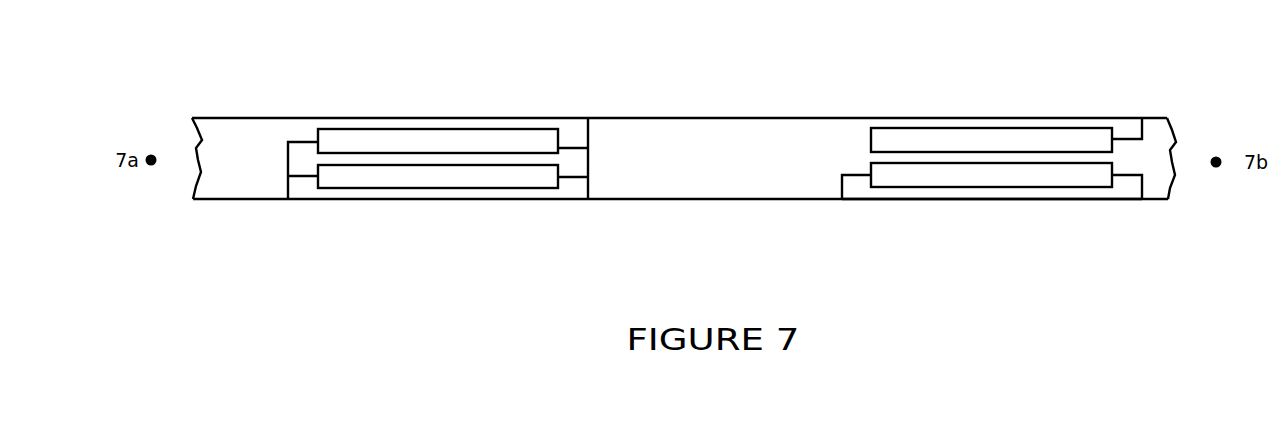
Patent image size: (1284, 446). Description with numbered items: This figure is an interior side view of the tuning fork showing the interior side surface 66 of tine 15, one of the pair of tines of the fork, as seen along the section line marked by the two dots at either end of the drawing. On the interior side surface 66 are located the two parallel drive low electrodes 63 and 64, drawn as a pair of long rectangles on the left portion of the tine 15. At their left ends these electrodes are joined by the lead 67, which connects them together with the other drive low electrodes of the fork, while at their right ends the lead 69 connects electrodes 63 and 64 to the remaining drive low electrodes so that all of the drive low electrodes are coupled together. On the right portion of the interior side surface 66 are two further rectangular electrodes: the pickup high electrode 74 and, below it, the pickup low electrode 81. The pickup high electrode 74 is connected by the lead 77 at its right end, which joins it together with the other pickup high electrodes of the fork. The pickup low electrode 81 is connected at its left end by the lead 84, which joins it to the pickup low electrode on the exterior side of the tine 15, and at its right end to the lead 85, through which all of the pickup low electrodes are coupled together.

The tine 15 is at (913, 200).
The drive low electrode 63 is at (405, 175).
The drive low electrode 64 is at (417, 141).
The interior side surface 66 is at (637, 170).
The lead 67 is at (288, 150).
The lead 69 is at (588, 133).
The pickup high electrode 74 is at (947, 138).
The lead 77 is at (1143, 127).
The pickup low electrode 81 is at (983, 174).
The lead 84 is at (840, 188).
The lead 85 is at (1145, 188).